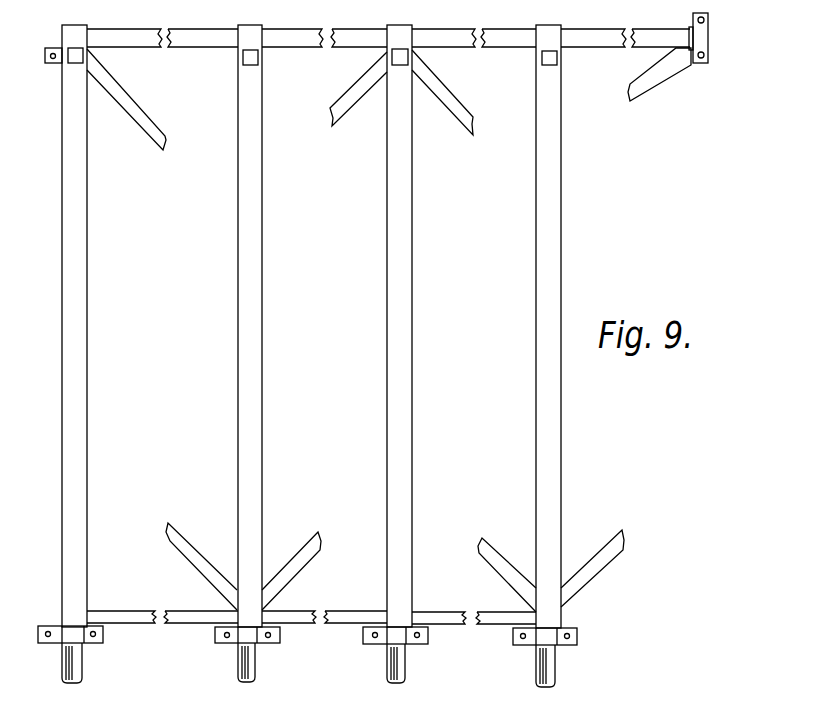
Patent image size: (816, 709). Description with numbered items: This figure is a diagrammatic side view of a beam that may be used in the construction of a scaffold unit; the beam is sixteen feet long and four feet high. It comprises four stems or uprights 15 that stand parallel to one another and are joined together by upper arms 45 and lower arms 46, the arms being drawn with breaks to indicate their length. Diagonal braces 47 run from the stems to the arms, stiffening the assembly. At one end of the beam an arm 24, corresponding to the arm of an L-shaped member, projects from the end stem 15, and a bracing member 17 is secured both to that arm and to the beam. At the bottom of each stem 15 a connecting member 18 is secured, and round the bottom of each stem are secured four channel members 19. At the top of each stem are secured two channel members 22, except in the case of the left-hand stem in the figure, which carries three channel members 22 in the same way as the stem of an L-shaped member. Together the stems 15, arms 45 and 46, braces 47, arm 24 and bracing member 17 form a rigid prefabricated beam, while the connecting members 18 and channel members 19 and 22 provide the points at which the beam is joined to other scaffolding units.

The stem 15 is at (82, 262).
The bracing member 17 is at (667, 63).
The connecting member 18 is at (82, 674).
The channel member 19 is at (78, 636).
The channel member 22 is at (73, 63).
The arm 24 is at (613, 33).
The arm 45 is at (185, 42).
The arm 46 is at (170, 611).
The diagonal brace 47 is at (153, 130).